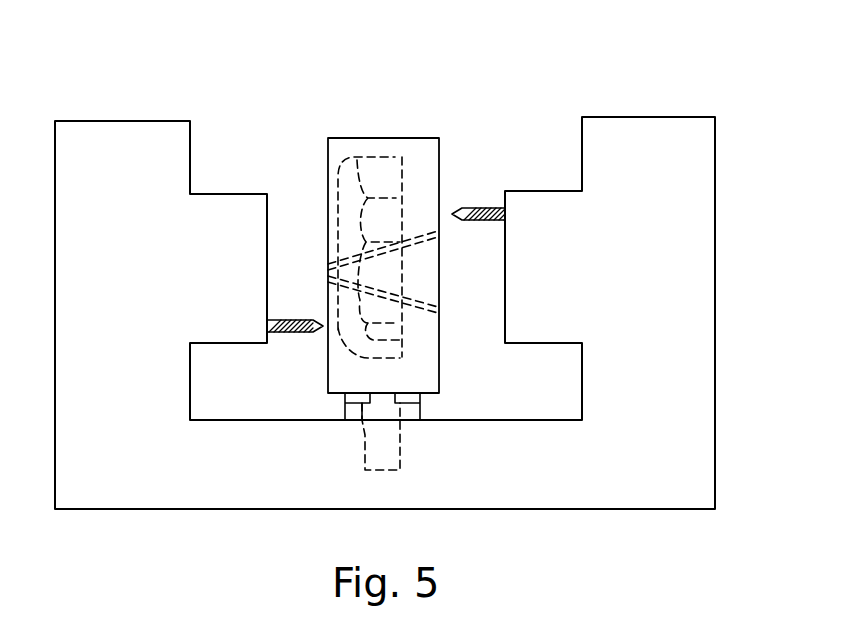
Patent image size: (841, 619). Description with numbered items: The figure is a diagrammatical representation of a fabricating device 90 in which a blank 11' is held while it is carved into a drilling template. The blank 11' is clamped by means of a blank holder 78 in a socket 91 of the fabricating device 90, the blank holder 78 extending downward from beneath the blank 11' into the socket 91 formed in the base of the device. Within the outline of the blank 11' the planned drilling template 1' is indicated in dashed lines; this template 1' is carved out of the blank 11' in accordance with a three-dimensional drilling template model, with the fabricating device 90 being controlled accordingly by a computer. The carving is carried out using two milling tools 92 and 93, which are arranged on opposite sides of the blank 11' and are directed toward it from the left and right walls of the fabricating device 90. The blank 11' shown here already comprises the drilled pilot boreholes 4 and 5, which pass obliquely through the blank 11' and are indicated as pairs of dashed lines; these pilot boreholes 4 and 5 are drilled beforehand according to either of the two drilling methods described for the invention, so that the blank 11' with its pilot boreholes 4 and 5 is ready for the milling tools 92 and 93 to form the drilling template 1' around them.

The planned drilling template 1' is at (384, 209).
The blank 11' is at (436, 245).
The pilot borehole 4 is at (438, 236).
The pilot borehole 5 is at (438, 305).
The blank holder 78 is at (400, 450).
The fabricating device 90 is at (650, 117).
The socket 91 is at (345, 418).
The milling tool 92 is at (283, 318).
The milling tool 93 is at (478, 207).